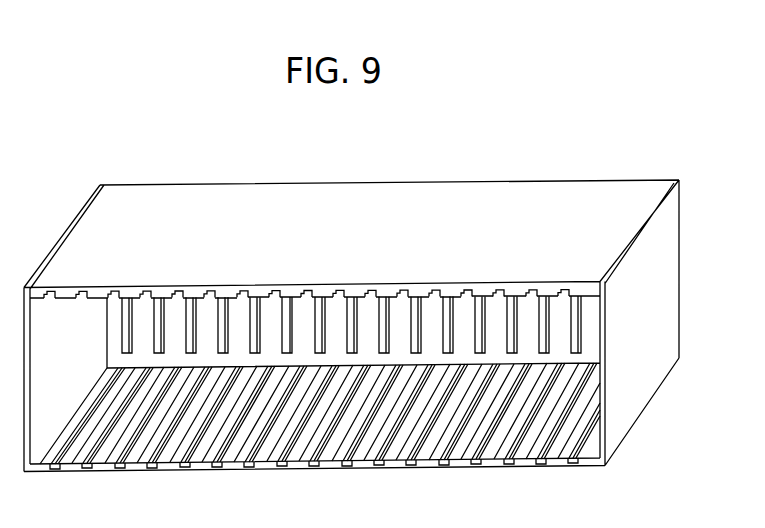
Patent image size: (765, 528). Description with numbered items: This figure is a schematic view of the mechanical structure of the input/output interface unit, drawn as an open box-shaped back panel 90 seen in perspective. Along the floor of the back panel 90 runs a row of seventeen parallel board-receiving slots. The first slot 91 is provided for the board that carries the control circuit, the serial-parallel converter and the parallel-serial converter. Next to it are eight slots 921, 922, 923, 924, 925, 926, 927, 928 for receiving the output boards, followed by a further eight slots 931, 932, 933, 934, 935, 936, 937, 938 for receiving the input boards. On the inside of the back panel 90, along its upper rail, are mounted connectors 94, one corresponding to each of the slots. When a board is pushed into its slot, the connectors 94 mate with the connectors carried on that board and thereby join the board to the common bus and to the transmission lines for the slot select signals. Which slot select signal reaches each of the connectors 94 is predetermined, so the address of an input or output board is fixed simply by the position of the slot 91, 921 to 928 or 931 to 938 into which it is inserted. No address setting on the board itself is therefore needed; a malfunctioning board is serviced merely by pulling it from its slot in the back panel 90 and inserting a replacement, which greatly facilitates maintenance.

The back panel 90 is at (559, 180).
The slot 91 is at (54, 469).
The slot 921 is at (86, 468).
The slot 922 is at (119, 468).
The slot 923 is at (151, 468).
The slot 924 is at (184, 467).
The slot 925 is at (216, 467).
The slot 926 is at (248, 467).
The slot 927 is at (281, 466).
The slot 928 is at (313, 466).
The slot 931 is at (346, 466).
The slot 932 is at (378, 465).
The slot 933 is at (410, 465).
The slot 934 is at (443, 465).
The slot 935 is at (475, 464).
The slot 936 is at (508, 464).
The slot 937 is at (540, 464).
The slot 938 is at (572, 463).
The connectors 94 is at (254, 294).